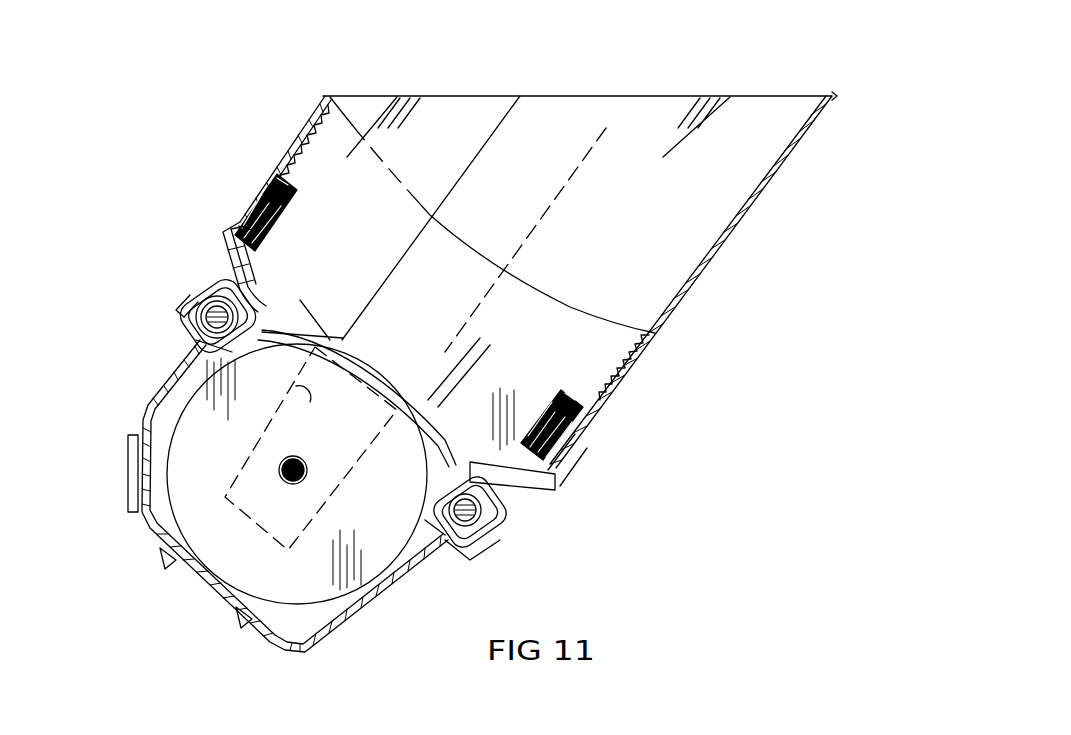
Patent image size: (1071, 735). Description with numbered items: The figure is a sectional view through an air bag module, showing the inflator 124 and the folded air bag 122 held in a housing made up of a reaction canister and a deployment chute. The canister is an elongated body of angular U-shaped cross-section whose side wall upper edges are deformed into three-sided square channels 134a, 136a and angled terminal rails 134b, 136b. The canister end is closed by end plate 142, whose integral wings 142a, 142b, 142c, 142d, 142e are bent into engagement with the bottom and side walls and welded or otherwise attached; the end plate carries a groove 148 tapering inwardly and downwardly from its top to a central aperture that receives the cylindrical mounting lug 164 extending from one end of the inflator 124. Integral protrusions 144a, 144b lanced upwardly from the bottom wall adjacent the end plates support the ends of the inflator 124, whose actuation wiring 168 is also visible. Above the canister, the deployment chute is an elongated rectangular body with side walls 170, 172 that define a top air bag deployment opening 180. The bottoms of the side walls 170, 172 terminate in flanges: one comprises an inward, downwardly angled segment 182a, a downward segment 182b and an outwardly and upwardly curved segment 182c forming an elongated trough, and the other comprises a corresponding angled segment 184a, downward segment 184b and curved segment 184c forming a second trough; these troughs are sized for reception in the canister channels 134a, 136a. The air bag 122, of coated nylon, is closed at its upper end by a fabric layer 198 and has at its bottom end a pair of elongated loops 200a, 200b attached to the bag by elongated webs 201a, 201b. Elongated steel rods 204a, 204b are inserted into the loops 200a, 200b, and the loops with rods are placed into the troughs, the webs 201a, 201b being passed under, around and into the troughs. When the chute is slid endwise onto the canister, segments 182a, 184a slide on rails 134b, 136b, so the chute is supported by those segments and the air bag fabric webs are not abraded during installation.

The air bag 122 is at (593, 417).
The inflator 124 is at (187, 417).
The three-sided square channel 134a is at (197, 303).
The angled terminal rail 134b is at (223, 230).
The three-sided square channel 136a is at (500, 538).
The angled terminal rail 136b is at (543, 482).
The end plate 142 is at (405, 558).
The integral wing 142a is at (420, 580).
The integral wing 142b is at (360, 613).
The integral wing 142c is at (173, 567).
The integral wing 142d is at (130, 457).
The integral wing 142e is at (180, 353).
The integral protrusion 144a is at (157, 560).
The integral protrusion 144b is at (237, 610).
The groove 148 is at (305, 385).
The cylindrical mounting lug 164 is at (297, 484).
The actuation wiring 168 is at (293, 453).
The side wall 170 is at (787, 163).
The side wall 172 is at (312, 117).
The top air bag deployment opening 180 is at (601, 117).
The inward, downwardly angled segment 182a is at (300, 248).
The downward segment 182b is at (298, 295).
The outwardly and upwardly curved segment 182c is at (200, 340).
The inward, downwardly angled segment 184a is at (505, 400).
The downward segment 184b is at (452, 477).
The outwardly and upwardly curved segment 184c is at (425, 520).
The fabric layer 198 is at (532, 286).
The elongated loop 200a is at (210, 277).
The elongated loop 200b is at (490, 517).
The elongated web 201a is at (285, 288).
The elongated web 201b is at (483, 407).
The elongated steel rod 204a is at (187, 313).
The elongated steel rod 204b is at (485, 487).